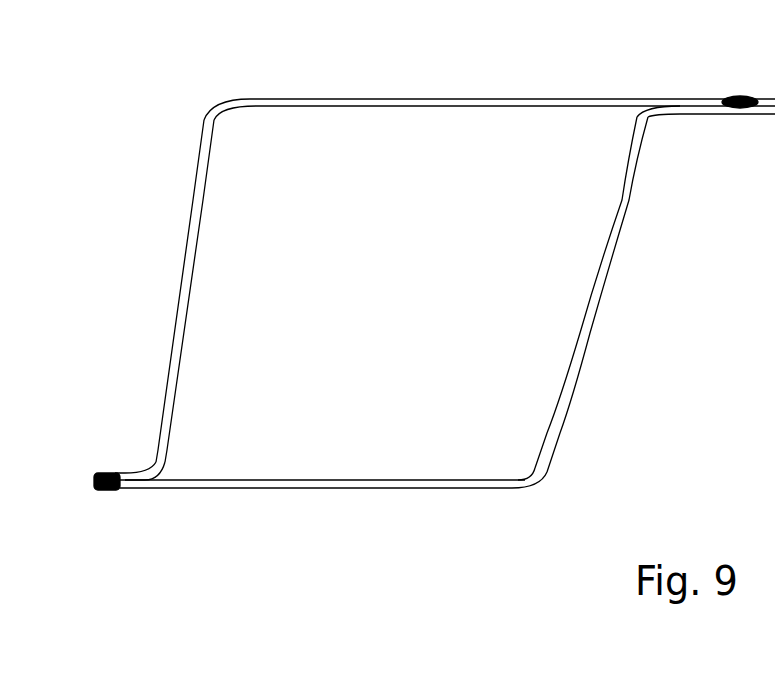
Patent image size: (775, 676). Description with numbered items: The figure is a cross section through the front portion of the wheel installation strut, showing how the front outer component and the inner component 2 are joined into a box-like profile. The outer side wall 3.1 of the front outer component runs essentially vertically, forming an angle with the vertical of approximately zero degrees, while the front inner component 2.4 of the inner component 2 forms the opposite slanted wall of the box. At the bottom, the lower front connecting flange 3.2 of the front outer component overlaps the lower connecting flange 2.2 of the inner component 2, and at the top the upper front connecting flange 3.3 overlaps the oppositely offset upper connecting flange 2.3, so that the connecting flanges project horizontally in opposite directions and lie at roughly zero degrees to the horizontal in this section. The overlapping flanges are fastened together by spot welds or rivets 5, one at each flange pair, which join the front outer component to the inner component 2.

The inner component 2 is at (535, 472).
The lower connecting flange 2.2 is at (372, 481).
The upper connecting flange 2.3 is at (682, 112).
The front inner component 2.4 is at (590, 325).
The outer side wall 3.1 is at (197, 205).
The lower front connecting flange 3.2 is at (112, 472).
The upper front connecting flange 3.3 is at (528, 101).
The spot welds or rivets 5 is at (737, 97).